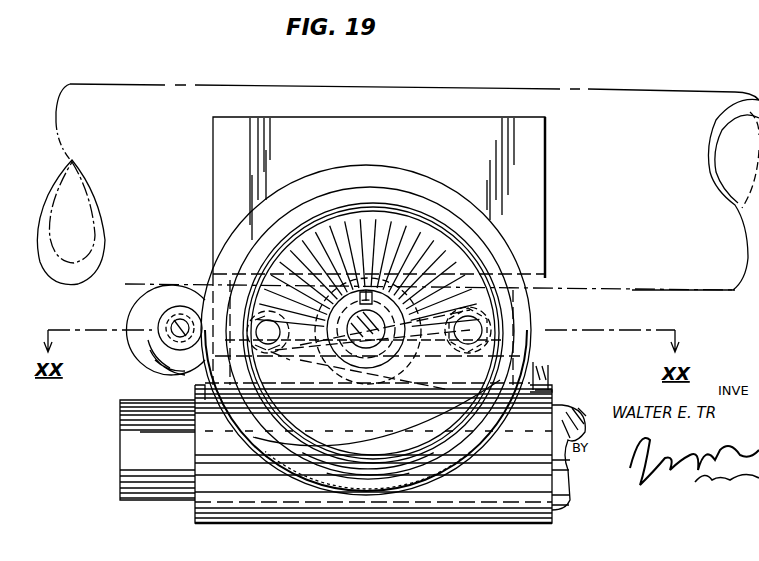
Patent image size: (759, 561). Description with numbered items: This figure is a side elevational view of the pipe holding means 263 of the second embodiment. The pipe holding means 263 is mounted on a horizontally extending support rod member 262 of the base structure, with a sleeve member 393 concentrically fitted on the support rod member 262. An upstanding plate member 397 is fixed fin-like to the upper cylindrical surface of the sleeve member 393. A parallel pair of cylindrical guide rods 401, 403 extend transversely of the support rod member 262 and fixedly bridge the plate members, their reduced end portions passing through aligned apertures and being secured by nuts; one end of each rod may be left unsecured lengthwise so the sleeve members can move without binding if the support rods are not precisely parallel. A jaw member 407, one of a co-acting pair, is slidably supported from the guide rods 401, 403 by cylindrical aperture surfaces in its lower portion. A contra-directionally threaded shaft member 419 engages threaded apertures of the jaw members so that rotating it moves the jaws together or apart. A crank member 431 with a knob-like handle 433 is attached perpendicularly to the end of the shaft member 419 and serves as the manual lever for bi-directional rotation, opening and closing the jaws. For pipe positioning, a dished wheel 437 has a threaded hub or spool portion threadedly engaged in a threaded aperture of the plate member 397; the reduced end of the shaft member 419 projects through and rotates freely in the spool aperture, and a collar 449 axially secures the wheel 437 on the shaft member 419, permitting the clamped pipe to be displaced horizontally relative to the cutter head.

The pipe holding means 263 is at (610, 78).
The jaw member 407 is at (228, 172).
The dished wheel 437 is at (233, 238).
The knob-like handle 433 is at (145, 312).
The crank member 431 is at (168, 334).
The sleeve member 393 is at (208, 443).
The support rod member 262 is at (120, 432).
The guide rod 401 is at (275, 343).
The guide rod 403 is at (466, 338).
The contra-directionally threaded shaft member 419 is at (370, 352).
The collar 449 is at (380, 350).
The plate member 397 is at (540, 368).